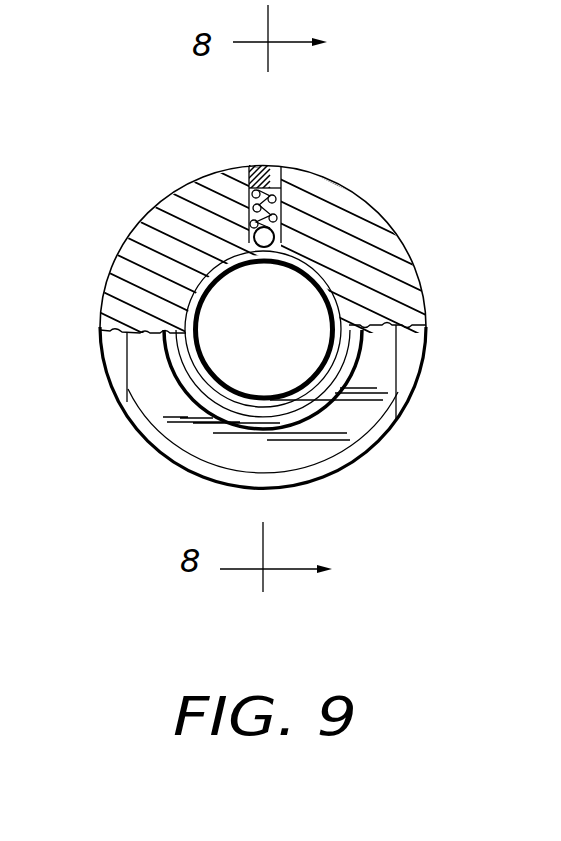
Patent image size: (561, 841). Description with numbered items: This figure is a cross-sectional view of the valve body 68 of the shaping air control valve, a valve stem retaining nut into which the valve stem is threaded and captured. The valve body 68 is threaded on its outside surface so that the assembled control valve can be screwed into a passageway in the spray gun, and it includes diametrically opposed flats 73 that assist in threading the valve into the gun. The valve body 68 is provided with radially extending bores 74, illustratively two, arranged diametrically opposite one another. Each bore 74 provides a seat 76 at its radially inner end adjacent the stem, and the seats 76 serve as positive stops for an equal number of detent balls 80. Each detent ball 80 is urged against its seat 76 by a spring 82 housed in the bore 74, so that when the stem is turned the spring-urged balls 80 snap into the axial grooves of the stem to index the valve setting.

The valve body 68 is at (400, 437).
The flats 73 is at (127, 380).
The bore 74 is at (259, 180).
The seat 76 is at (266, 249).
The detent ball 80 is at (276, 233).
The spring 82 is at (200, 190).